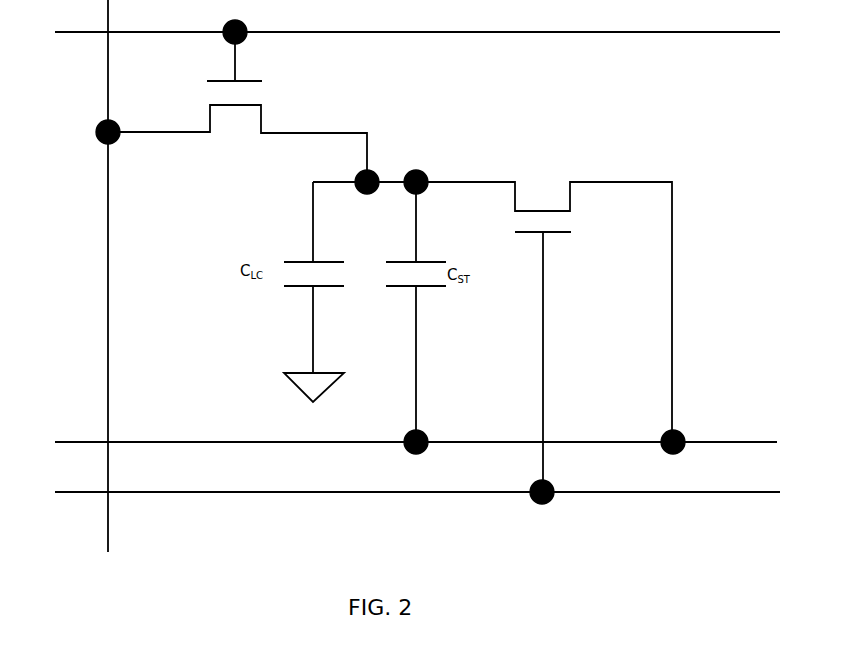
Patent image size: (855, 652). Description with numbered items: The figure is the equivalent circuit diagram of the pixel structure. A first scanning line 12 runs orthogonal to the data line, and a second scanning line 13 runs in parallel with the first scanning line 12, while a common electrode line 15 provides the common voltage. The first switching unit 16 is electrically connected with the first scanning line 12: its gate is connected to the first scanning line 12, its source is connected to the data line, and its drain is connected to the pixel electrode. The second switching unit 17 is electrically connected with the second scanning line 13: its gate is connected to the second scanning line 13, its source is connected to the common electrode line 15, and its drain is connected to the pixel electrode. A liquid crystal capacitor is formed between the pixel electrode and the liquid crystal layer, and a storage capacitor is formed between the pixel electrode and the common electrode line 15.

The first scanning line 12 is at (405, 32).
The second scanning line 13 is at (404, 492).
The common electrode line 15 is at (404, 442).
The first switching unit 16 is at (260, 99).
The second switching unit 17 is at (570, 218).